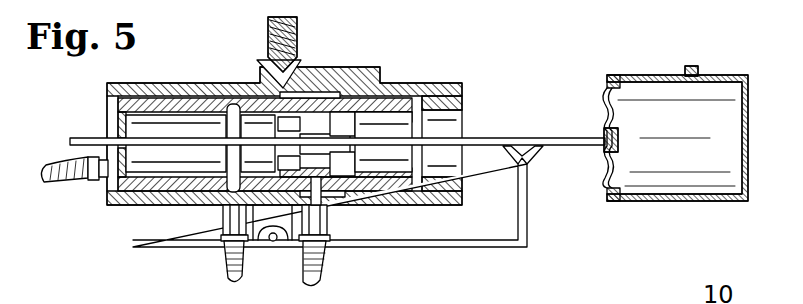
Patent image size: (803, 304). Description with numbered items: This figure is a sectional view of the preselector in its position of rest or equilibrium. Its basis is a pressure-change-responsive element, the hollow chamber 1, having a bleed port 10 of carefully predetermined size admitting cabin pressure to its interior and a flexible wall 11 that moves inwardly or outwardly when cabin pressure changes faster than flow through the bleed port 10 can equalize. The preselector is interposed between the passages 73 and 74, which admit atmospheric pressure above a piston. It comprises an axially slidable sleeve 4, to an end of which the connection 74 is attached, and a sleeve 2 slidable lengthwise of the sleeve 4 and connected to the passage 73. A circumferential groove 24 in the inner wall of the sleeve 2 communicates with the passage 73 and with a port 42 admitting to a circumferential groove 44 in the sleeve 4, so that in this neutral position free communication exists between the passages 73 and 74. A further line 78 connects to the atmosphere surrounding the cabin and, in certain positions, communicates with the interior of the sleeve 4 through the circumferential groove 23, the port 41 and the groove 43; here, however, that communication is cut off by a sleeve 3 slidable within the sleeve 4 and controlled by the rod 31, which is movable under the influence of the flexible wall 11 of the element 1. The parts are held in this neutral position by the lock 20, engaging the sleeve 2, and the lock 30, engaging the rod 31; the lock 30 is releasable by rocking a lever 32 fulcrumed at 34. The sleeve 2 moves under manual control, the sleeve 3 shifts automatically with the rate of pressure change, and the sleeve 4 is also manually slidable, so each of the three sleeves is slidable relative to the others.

The hollow chamber 1 is at (750, 138).
The sleeve 2 is at (134, 206).
The sleeve 3 is at (268, 95).
The sleeve 4 is at (414, 98).
The bleed port 10 is at (698, 67).
The flexible wall 11 is at (607, 116).
The lock 20 is at (286, 68).
The circumferential groove 23 is at (320, 254).
The circumferential groove 24 is at (258, 247).
The lock 30 is at (530, 160).
The rod 31 is at (480, 142).
The lever 32 is at (470, 248).
The fulcrum 34 is at (272, 242).
The port 41 is at (322, 200).
The port 42 is at (226, 208).
The groove 43 is at (352, 96).
The circumferential groove 44 is at (233, 106).
The passage 73 is at (223, 263).
The passage 74 is at (62, 184).
The line 78 is at (316, 260).